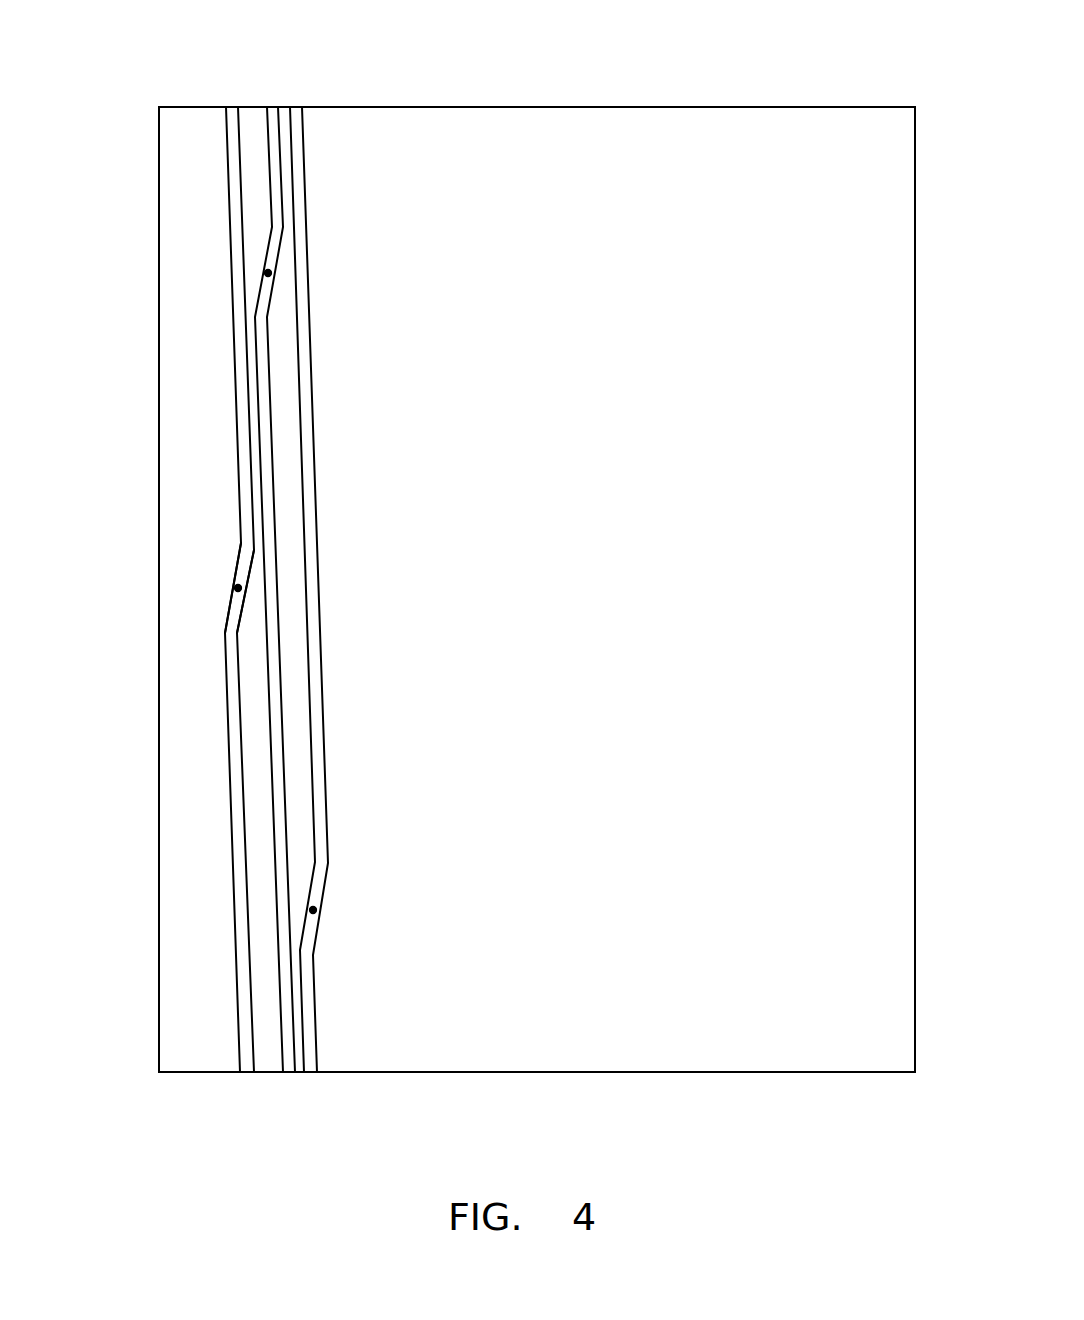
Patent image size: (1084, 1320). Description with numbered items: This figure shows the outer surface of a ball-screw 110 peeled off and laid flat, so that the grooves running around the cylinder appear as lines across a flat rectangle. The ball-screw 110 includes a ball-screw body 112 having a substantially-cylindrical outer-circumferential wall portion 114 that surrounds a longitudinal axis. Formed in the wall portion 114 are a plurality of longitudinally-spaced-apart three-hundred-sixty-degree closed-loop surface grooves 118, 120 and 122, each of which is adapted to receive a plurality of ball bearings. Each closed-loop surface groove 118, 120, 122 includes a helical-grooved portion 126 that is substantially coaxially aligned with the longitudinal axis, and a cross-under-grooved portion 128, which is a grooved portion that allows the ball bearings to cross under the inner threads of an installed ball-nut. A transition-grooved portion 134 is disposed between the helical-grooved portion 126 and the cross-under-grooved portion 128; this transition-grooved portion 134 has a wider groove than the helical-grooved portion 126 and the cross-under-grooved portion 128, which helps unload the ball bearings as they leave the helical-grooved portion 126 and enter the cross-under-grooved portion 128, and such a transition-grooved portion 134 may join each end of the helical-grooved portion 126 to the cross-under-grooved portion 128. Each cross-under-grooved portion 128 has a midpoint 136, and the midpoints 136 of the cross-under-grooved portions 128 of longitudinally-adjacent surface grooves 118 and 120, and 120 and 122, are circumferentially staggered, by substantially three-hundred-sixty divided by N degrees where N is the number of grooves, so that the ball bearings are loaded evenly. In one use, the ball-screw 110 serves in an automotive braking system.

The ball-screw 110 is at (572, 55).
The ball-screw body 112 is at (642, 106).
The outer-circumferential wall portion 114 is at (785, 128).
The 360-degree closed-loop surface groove 118 is at (226, 697).
The 360-degree closed-loop surface groove 120 is at (272, 823).
The 360-degree closed-loop surface groove 122 is at (324, 670).
The helical-grooved portion 126 is at (232, 190).
The cross-under-grooved portion 128 is at (228, 596).
The transition-grooved portion 134 is at (240, 533).
The midpoint 136 is at (268, 273).